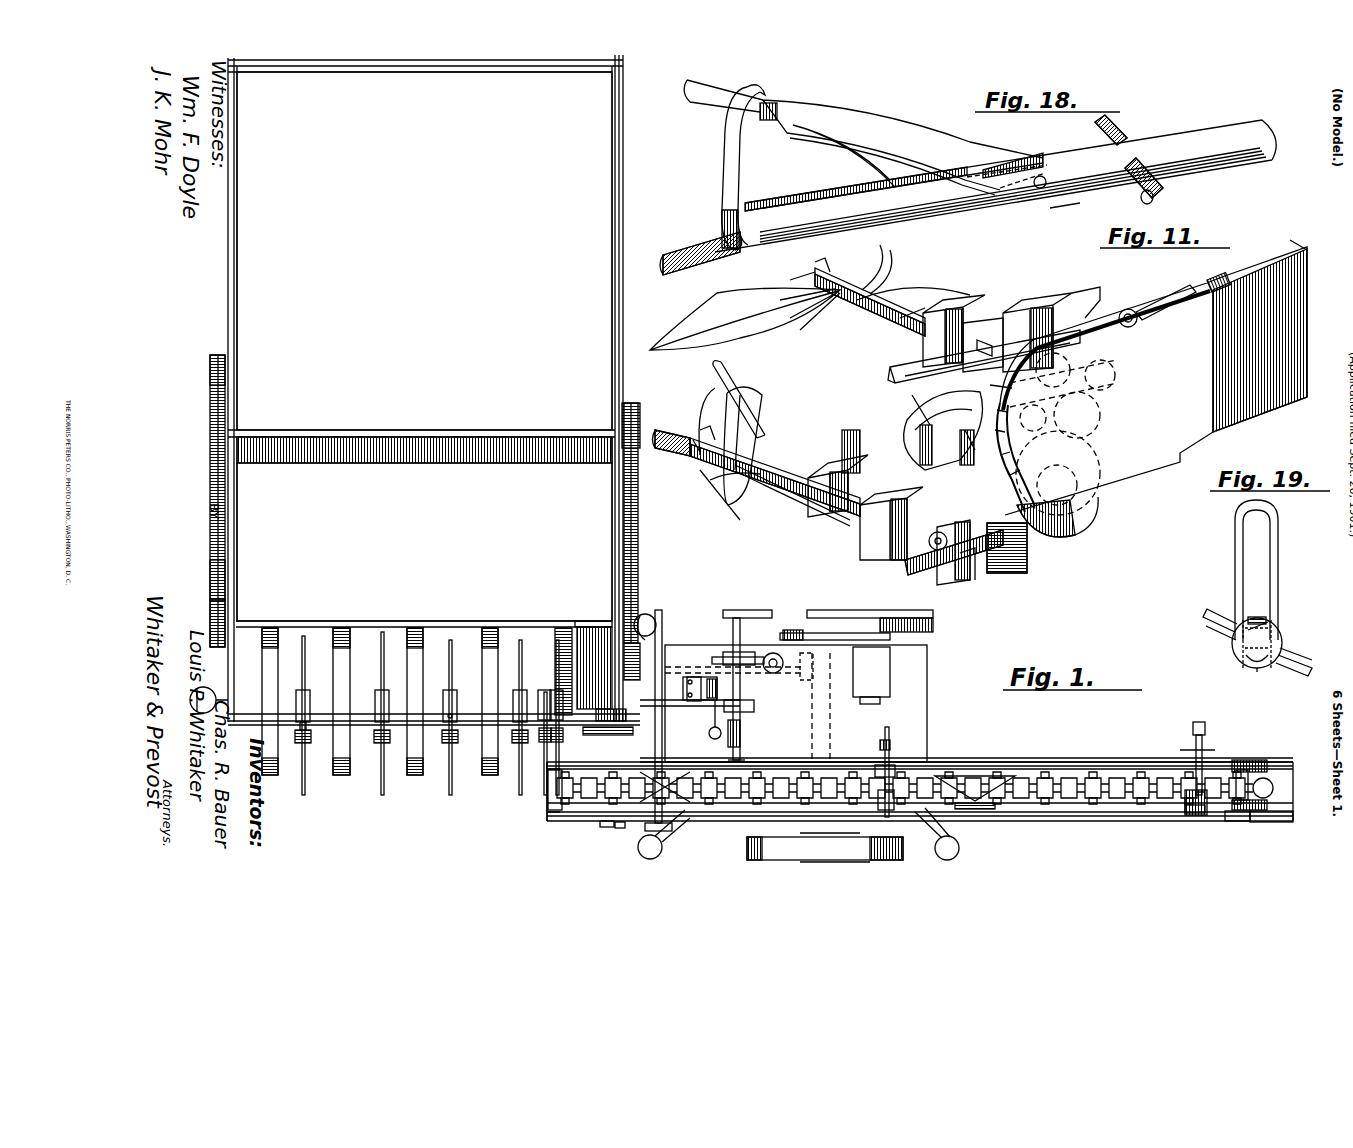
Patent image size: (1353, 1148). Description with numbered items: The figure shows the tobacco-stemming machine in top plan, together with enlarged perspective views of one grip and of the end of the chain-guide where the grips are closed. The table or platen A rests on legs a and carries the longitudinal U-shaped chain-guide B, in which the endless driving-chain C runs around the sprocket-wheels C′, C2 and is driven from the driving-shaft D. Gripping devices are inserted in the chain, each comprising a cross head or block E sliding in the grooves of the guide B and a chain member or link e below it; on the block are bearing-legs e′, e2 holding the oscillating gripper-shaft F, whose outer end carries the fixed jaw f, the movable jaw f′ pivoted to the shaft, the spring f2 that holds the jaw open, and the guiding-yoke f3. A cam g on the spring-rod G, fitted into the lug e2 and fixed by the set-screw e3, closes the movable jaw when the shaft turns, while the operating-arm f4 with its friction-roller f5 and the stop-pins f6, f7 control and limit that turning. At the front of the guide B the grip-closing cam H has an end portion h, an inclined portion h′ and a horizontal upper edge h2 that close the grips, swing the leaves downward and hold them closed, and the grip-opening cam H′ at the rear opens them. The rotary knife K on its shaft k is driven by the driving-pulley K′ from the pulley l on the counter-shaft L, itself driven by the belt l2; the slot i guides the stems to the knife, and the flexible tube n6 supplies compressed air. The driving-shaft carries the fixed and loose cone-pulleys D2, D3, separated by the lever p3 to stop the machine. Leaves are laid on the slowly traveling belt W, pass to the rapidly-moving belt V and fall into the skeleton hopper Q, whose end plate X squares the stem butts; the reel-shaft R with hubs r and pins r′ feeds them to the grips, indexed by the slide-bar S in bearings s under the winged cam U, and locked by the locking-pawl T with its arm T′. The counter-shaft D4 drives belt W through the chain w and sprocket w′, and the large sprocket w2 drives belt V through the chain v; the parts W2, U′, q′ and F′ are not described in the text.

In FIG. 1, the slowly traveling belt W is at (424, 251).
In FIG. 1, the rapidly-moving belt V is at (424, 529).
In FIG. 1, the chain w is at (638, 533).
In FIG. 11, the chain w is at (678, 489).
In FIG. 1, the sprocket w′ is at (640, 412).
In FIG. 11, the sprocket w′ is at (683, 421).
In FIG. 1, the large sprocket w2 is at (210, 412).
In FIG. 1, the standard base W2 is at (672, 828).
In FIG. 1, the skeleton hopper Q is at (210, 546).
In FIG. 1, the chain v is at (210, 580).
In FIG. 1, the winged cam U is at (612, 827).
In FIG. 1, the bracket arm U′ is at (210, 620).
In FIG. 1, the post q′ is at (262, 652).
In FIG. 1, the hub r is at (296, 706).
In FIG. 1, the radial spokes or pins r′ is at (451, 660).
In FIG. 1, the reel-shaft R is at (320, 708).
In FIG. 1, the guiding-yoke f3 is at (548, 712).
In FIG. 18, the guiding-yoke f3 is at (725, 150).
In FIG. 11, the guiding-yoke f3 is at (705, 396).
In FIG. 19, the guiding-yoke f3 is at (1256, 570).
In FIG. 1, the end plate X is at (592, 627).
In FIG. 1, the counter-shaft D4 is at (577, 627).
In FIG. 1, the locking-pawl T is at (607, 700).
In FIG. 1, the arm T′ is at (688, 720).
In FIG. 1, the bearings s is at (636, 661).
In FIG. 1, the slide-bar S is at (660, 632).
In FIG. 1, the legs a is at (658, 610).
In FIG. 1, the driving-shaft D is at (796, 703).
In FIG. 1, the driving-pulley K′ is at (735, 610).
In FIG. 1, the lever p3 is at (746, 618).
In FIG. 1, the flexible tube n6 is at (720, 656).
In FIG. 1, the knife-shaft k is at (745, 688).
In FIG. 1, the rotary knife K is at (746, 726).
In FIG. 1, the slot i is at (722, 733).
In FIG. 1, the counter-shaft L is at (870, 612).
In FIG. 1, the pulley l is at (878, 640).
In FIG. 1, the belt l2 is at (823, 671).
In FIG. 1, the chain-guide B is at (1050, 763).
In FIG. 1, the endless driving-chain C is at (1085, 778).
In FIG. 1, the sprocket-wheel C′ is at (1010, 776).
In FIG. 1, the sprocket-wheel C2 is at (1255, 760).
In FIG. 1, the grip-opening cam H′ is at (1270, 822).
In FIG. 1, the grip-closing cam H is at (585, 812).
In FIG. 11, the grip-closing cam H is at (1153, 381).
In FIG. 1, the cam g is at (1192, 748).
In FIG. 11, the cam g is at (700, 486).
In FIG. 1, the gripper-shaft F is at (1200, 735).
In FIG. 11, the gripper-shaft F is at (935, 300).
In FIG. 19, the gripper-shaft F is at (1232, 643).
In FIG. 18, the clamp bar F′ is at (1163, 140).
In FIG. 11, the clamp bar F′ is at (792, 468).
In FIG. 19, the clamp bar F′ is at (1245, 665).
In FIG. 1, the bearing-leg e′ is at (1243, 770).
In FIG. 11, the bearing-leg e′ is at (992, 320).
In FIG. 1, the bearing-lug e2 is at (1190, 813).
In FIG. 11, the bearing-lug e2 is at (880, 570).
In FIG. 11, the set-screw e3 is at (1040, 302).
In FIG. 11, the chain member or link e is at (905, 430).
In FIG. 1, the cross head or block E is at (548, 795).
In FIG. 11, the cross head or block E is at (920, 362).
In FIG. 1, the table or platen A is at (920, 740).
In FIG. 1, the spring-rod G is at (877, 750).
In FIG. 11, the spring-rod G is at (960, 300).
In FIG. 1, the fixed friction cone-pulley D2 is at (747, 846).
In FIG. 1, the loose cone-pulley D3 is at (846, 848).
In FIG. 18, the fixed jaw f is at (708, 260).
In FIG. 11, the fixed jaw f is at (675, 457).
In FIG. 19, the fixed jaw f is at (1262, 668).
In FIG. 18, the movable jaw f′ is at (845, 108).
In FIG. 11, the movable jaw f′ is at (846, 292).
In FIG. 19, the movable jaw f′ is at (1270, 625).
In FIG. 18, the spring f2 is at (845, 150).
In FIG. 1, the operating-arm f4 is at (1237, 821).
In FIG. 11, the operating-arm f4 is at (1132, 309).
In FIG. 11, the friction-roller f5 is at (1172, 300).
In FIG. 18, the stop-pin f6 is at (1095, 132).
In FIG. 19, the stop-pin f6 is at (1215, 615).
In FIG. 18, the stop-pin f7 is at (1158, 196).
In FIG. 19, the stop-pin f7 is at (1300, 655).
In FIG. 11, the end portion h is at (1102, 420).
In FIG. 11, the inclined portion h′ is at (1220, 288).
In FIG. 11, the horizontal upper edge h2 is at (1294, 235).